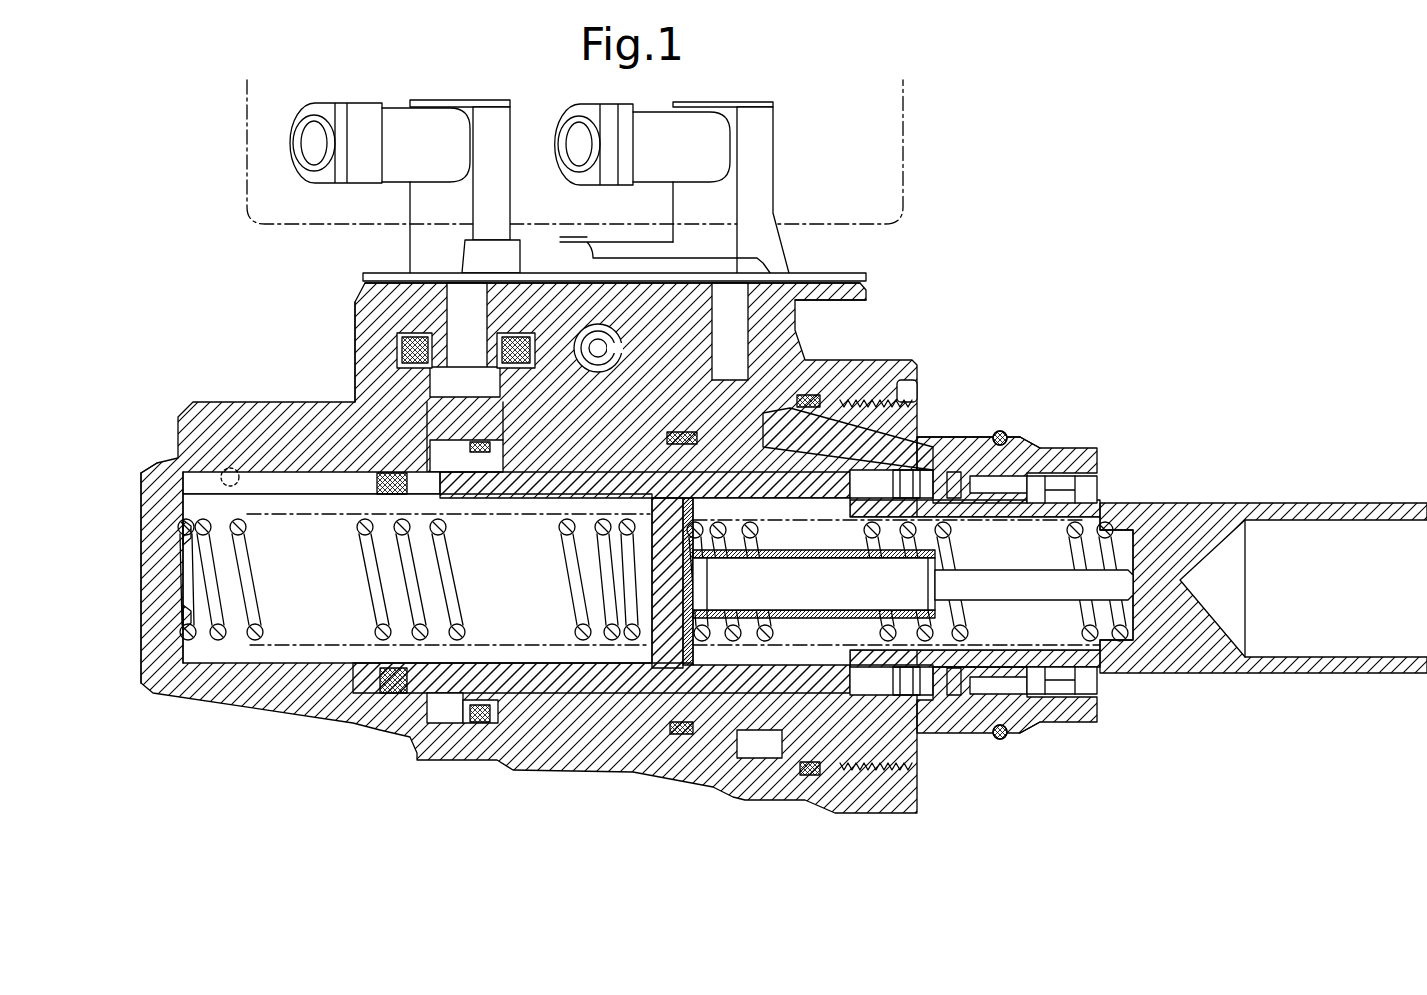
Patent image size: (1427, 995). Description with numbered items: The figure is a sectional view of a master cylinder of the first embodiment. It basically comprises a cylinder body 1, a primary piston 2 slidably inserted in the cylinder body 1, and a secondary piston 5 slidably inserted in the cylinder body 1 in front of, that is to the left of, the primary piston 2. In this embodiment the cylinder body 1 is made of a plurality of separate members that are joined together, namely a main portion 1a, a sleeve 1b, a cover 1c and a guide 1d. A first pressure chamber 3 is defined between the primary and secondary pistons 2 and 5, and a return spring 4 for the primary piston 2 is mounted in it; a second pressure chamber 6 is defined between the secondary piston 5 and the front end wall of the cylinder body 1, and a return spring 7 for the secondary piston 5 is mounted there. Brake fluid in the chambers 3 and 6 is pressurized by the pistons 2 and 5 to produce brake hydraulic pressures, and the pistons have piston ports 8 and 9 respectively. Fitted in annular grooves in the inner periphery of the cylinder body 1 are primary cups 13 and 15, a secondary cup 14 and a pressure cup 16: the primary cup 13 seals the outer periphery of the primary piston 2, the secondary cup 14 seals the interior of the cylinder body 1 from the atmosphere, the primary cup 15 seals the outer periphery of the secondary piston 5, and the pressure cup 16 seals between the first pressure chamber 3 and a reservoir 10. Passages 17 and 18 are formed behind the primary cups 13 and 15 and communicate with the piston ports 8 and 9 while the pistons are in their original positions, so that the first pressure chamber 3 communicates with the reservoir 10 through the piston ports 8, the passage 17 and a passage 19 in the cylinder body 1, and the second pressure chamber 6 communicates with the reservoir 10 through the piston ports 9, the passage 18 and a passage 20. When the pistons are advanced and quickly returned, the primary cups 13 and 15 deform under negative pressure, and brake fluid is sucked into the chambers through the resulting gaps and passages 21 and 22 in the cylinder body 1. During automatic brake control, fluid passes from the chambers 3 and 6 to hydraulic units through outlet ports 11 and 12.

The cylinder body 1 is at (907, 352).
The main portion 1a is at (908, 368).
The sleeve 1b is at (925, 428).
The cover 1c is at (985, 440).
The guide 1d is at (1040, 473).
The primary piston 2 is at (1207, 500).
The first pressure chamber 3 is at (860, 772).
The return spring 4 is at (830, 660).
The secondary piston 5 is at (445, 690).
The second pressure chamber 6 is at (258, 655).
The return spring 7 is at (188, 696).
The piston ports 8 is at (1040, 450).
The piston ports 9 is at (333, 493).
The reservoir 10 is at (887, 133).
The outlet port 11 is at (548, 420).
The outlet port 12 is at (200, 487).
The primary cup 13 is at (900, 737).
The secondary cup 14 is at (1070, 720).
The primary cup 15 is at (393, 694).
The pressure cup 16 is at (543, 735).
The passage 17 is at (1023, 447).
The passage 18 is at (437, 415).
The passage 19 is at (815, 430).
The passage 20 is at (362, 303).
The passage 21 is at (690, 700).
The passage 22 is at (275, 478).